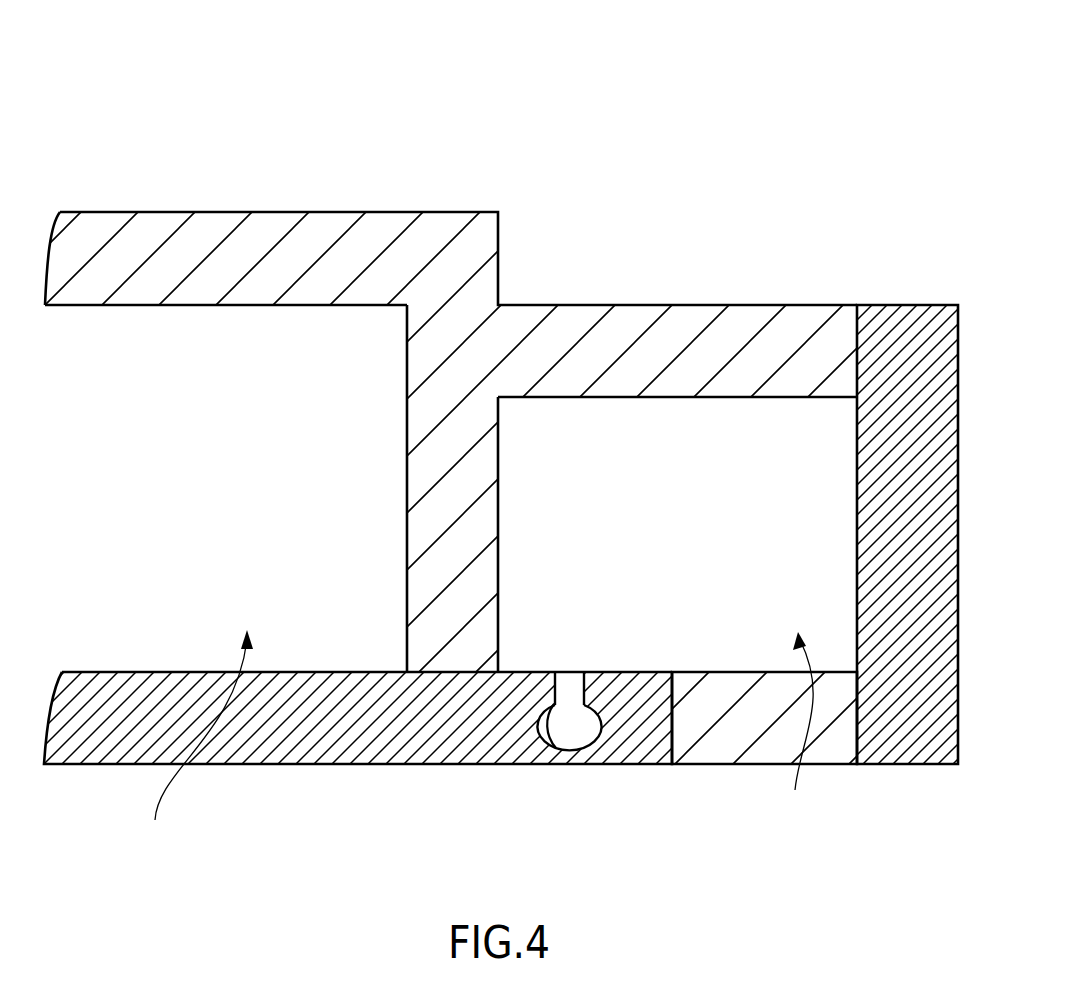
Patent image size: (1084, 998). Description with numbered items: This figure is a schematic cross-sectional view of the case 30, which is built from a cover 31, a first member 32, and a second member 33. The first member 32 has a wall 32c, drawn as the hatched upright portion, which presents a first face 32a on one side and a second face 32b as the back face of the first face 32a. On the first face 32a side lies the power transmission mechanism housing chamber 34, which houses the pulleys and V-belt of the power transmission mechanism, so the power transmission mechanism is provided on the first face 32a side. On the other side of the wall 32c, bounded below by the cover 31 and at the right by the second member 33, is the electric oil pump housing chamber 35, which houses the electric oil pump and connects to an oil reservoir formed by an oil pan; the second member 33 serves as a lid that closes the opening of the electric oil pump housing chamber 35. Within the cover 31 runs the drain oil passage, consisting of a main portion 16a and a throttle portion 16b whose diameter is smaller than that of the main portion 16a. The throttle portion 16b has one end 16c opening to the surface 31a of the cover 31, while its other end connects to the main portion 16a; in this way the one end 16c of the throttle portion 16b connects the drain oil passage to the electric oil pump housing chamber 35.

The case 30 is at (817, 168).
The cover 31 is at (287, 764).
The surface of the cover 31a is at (342, 670).
The first member 32 is at (342, 213).
The first face 32a is at (407, 404).
The second face 32b is at (498, 477).
The wall 32c is at (443, 513).
The second member 33 is at (902, 305).
The power transmission mechanism housing chamber 34 is at (198, 741).
The electric oil pump housing chamber 35 is at (764, 742).
The main portion 16a is at (552, 741).
The throttle portion 16b is at (590, 688).
The one end of the throttle portion 16c is at (568, 672).